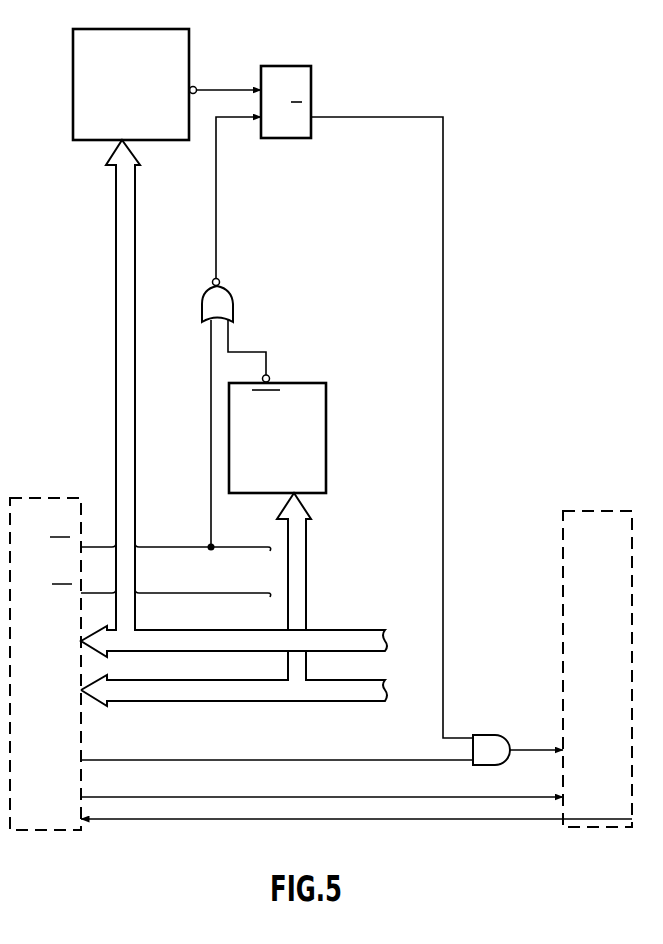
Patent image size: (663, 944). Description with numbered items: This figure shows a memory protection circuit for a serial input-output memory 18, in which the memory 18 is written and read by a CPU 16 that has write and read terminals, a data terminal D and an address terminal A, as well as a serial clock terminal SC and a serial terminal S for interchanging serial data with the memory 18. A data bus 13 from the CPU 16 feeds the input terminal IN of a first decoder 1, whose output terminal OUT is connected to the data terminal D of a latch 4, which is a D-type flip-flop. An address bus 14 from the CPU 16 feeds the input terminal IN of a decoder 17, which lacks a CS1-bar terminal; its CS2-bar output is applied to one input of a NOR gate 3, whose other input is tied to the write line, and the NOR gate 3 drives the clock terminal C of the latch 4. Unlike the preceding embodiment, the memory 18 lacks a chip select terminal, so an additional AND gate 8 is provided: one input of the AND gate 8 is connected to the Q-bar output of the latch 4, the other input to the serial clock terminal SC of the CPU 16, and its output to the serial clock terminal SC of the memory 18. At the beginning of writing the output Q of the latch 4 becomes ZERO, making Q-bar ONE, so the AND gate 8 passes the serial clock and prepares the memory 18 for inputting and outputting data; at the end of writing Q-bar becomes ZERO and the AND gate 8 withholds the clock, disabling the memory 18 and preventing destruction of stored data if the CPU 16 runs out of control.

The first decoder 1 is at (101, 28).
The latch 4 is at (262, 67).
The NOR gate 3 is at (229, 297).
The decoder 17 is at (291, 382).
The CPU 16 is at (55, 497).
The data bus 13 is at (154, 634).
The address bus 14 is at (127, 685).
The AND gate 8 is at (497, 734).
The memory 18 is at (562, 512).